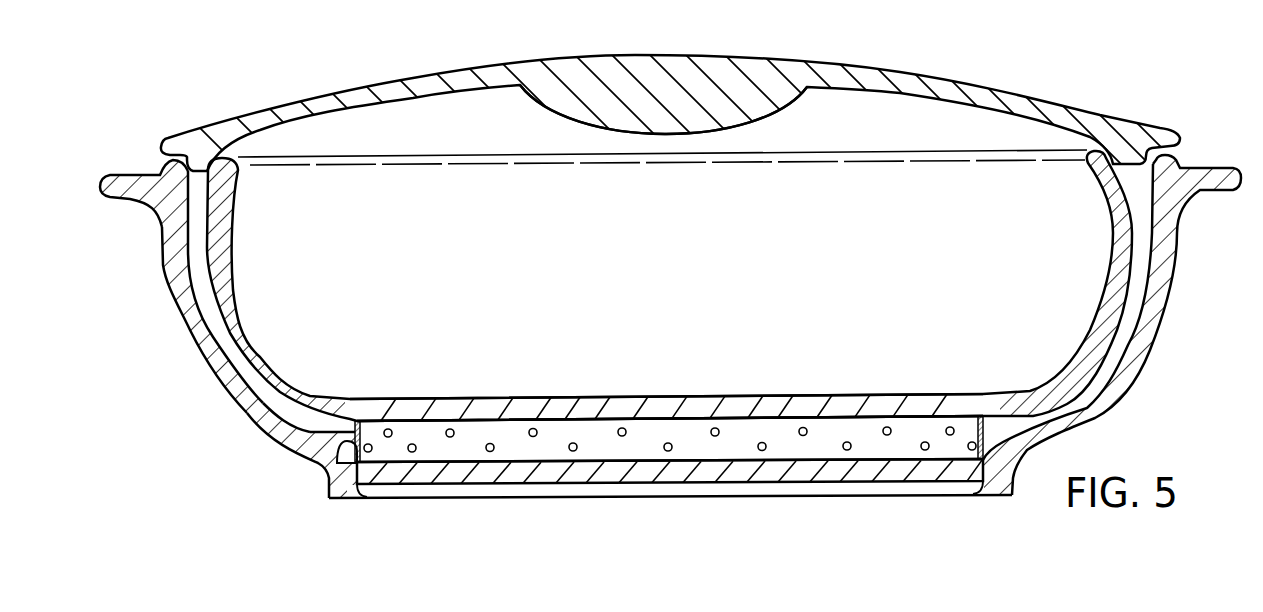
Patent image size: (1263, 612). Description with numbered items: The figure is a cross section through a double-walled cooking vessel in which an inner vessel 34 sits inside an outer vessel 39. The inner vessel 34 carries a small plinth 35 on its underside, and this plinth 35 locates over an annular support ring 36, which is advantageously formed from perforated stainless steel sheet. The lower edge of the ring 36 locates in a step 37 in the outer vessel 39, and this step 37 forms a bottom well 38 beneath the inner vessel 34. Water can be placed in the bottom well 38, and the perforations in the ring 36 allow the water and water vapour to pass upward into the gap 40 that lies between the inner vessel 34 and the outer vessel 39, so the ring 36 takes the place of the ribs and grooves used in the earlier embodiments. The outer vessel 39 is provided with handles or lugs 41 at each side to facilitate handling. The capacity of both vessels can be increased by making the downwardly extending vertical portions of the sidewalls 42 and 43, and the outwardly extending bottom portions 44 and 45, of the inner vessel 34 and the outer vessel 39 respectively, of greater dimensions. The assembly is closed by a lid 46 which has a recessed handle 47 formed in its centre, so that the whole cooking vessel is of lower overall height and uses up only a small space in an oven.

The inner vessel 34 is at (290, 402).
The small plinth 35 is at (362, 423).
The annular support ring 36 is at (333, 457).
The step 37 is at (347, 465).
The bottom well 38 is at (555, 447).
The outer vessel 39 is at (197, 353).
The gap 40 is at (248, 393).
The handles or lugs 41 is at (140, 183).
The sidewall of inner vessel 42 is at (223, 275).
The sidewall of outer vessel 43 is at (168, 288).
The bottom portion of inner vessel 44 is at (627, 407).
The bottom portion of outer vessel 45 is at (653, 473).
The lid 46 is at (990, 87).
The recessed handle 47 is at (758, 72).